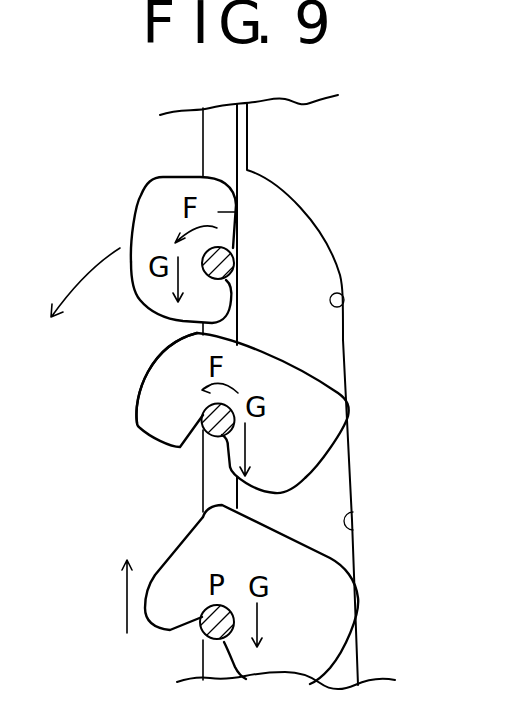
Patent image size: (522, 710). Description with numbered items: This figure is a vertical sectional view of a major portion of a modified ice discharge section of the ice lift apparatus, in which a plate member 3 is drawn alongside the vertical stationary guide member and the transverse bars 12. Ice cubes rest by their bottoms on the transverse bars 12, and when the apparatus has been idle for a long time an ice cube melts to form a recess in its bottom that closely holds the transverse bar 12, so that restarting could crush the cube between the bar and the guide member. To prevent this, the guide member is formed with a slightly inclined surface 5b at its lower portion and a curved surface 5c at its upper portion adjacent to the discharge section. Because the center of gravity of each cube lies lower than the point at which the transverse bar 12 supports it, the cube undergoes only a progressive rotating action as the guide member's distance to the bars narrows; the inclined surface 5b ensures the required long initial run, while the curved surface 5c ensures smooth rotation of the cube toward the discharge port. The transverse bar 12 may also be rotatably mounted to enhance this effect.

The mounting plate 3 is at (220, 152).
The slightly inclined surface 5b is at (353, 508).
The curved surface 5c is at (341, 287).
The transverse bar 12 is at (237, 262).